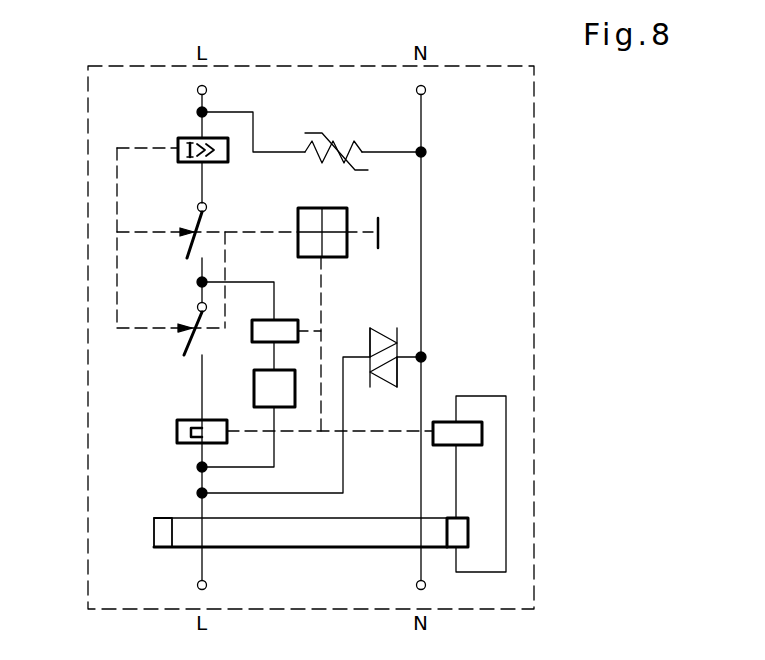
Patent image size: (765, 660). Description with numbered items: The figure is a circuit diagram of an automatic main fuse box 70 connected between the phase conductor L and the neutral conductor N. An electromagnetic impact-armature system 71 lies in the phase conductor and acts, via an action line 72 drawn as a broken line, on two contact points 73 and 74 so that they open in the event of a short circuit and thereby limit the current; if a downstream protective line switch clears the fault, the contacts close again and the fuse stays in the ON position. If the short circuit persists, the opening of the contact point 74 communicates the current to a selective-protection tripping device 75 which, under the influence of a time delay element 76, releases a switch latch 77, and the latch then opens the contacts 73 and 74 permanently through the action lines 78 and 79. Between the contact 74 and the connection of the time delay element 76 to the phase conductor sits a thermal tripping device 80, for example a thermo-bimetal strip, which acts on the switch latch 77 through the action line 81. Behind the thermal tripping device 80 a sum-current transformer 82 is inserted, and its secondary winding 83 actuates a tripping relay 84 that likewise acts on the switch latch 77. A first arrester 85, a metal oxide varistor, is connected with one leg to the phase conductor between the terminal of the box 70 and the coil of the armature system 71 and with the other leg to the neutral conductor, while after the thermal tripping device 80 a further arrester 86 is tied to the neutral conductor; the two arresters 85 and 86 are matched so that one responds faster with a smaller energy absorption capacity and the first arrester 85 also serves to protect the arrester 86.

The automatic main fuse box 70 is at (88, 354).
The electromagnetic impact-armature system 71 is at (178, 141).
The action line 72 is at (117, 173).
The contact point 73 is at (180, 250).
The contact point 74 is at (186, 356).
The selective-protection tripping device 75 is at (253, 337).
The time delay element 76 is at (252, 402).
The switch latch 77 is at (340, 219).
The action line 78 is at (252, 232).
The action line 79 is at (228, 258).
The thermal tripping device 80 is at (178, 440).
The action line 81 is at (323, 345).
The sum-current transformer 82 is at (157, 543).
The secondary winding 83 is at (460, 525).
The tripping relay 84 is at (483, 436).
The first arrester 85 is at (353, 145).
The further arrester 86 is at (399, 341).